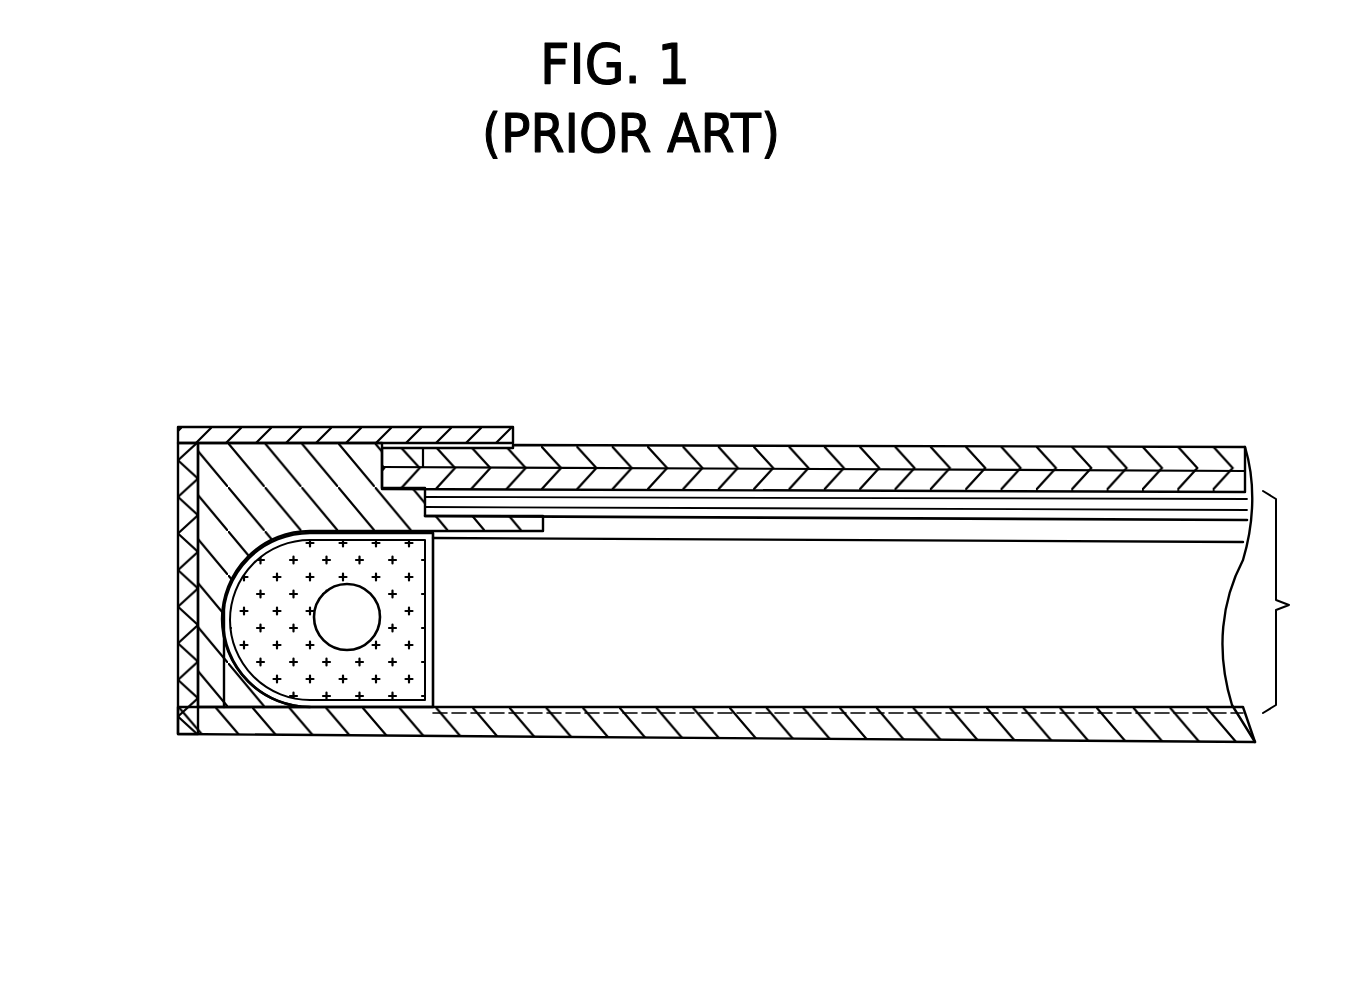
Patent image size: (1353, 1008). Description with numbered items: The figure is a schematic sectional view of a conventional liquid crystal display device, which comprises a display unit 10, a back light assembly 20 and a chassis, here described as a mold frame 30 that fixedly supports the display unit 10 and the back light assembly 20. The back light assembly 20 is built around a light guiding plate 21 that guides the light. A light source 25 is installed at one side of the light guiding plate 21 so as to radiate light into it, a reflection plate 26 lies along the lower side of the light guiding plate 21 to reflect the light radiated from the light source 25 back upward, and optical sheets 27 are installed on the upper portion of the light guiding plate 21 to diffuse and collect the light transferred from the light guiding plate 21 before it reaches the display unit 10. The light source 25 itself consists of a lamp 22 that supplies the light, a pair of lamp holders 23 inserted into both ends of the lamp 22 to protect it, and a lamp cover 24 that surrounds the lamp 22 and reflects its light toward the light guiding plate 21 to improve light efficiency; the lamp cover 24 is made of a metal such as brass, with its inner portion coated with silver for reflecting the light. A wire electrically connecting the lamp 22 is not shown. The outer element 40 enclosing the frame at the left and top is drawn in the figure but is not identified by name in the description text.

The display unit 10 is at (872, 428).
The back light assembly 20 is at (1300, 602).
The light guiding plate 21 is at (910, 660).
The lamp 22 is at (358, 628).
The lamp holders 23 is at (320, 680).
The lamp cover 24 is at (257, 687).
The light source 25 is at (412, 853).
The reflection plate 26 is at (705, 712).
The optical sheets 27 is at (1126, 505).
The mold frame 30 is at (212, 560).
The top chassis 40 is at (185, 518).